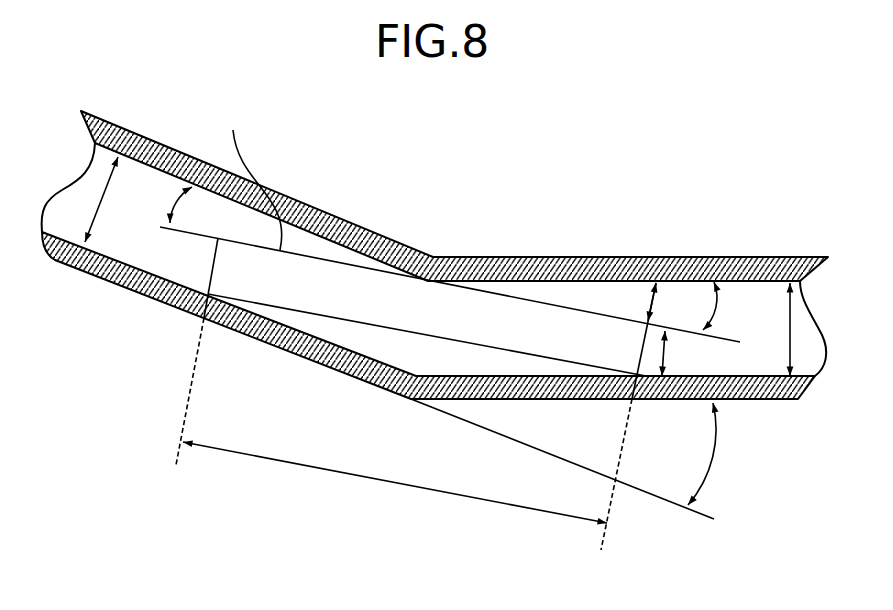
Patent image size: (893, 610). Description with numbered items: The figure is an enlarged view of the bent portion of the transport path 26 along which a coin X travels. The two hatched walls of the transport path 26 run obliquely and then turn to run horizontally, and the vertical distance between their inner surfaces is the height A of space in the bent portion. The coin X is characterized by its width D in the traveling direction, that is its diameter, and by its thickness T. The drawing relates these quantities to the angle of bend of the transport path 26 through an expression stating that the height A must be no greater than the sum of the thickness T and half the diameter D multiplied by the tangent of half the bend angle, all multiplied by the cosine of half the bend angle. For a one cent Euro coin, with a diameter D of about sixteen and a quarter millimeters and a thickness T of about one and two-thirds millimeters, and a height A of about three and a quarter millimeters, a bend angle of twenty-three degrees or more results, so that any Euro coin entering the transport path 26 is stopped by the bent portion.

The transport path 26 is at (688, 257).
The coin X is at (254, 178).
The height of space A is at (436, 266).
The offset distance B is at (661, 302).
The thickness of the coin T is at (673, 353).
The width of the coin in the traveling direction D is at (395, 482).